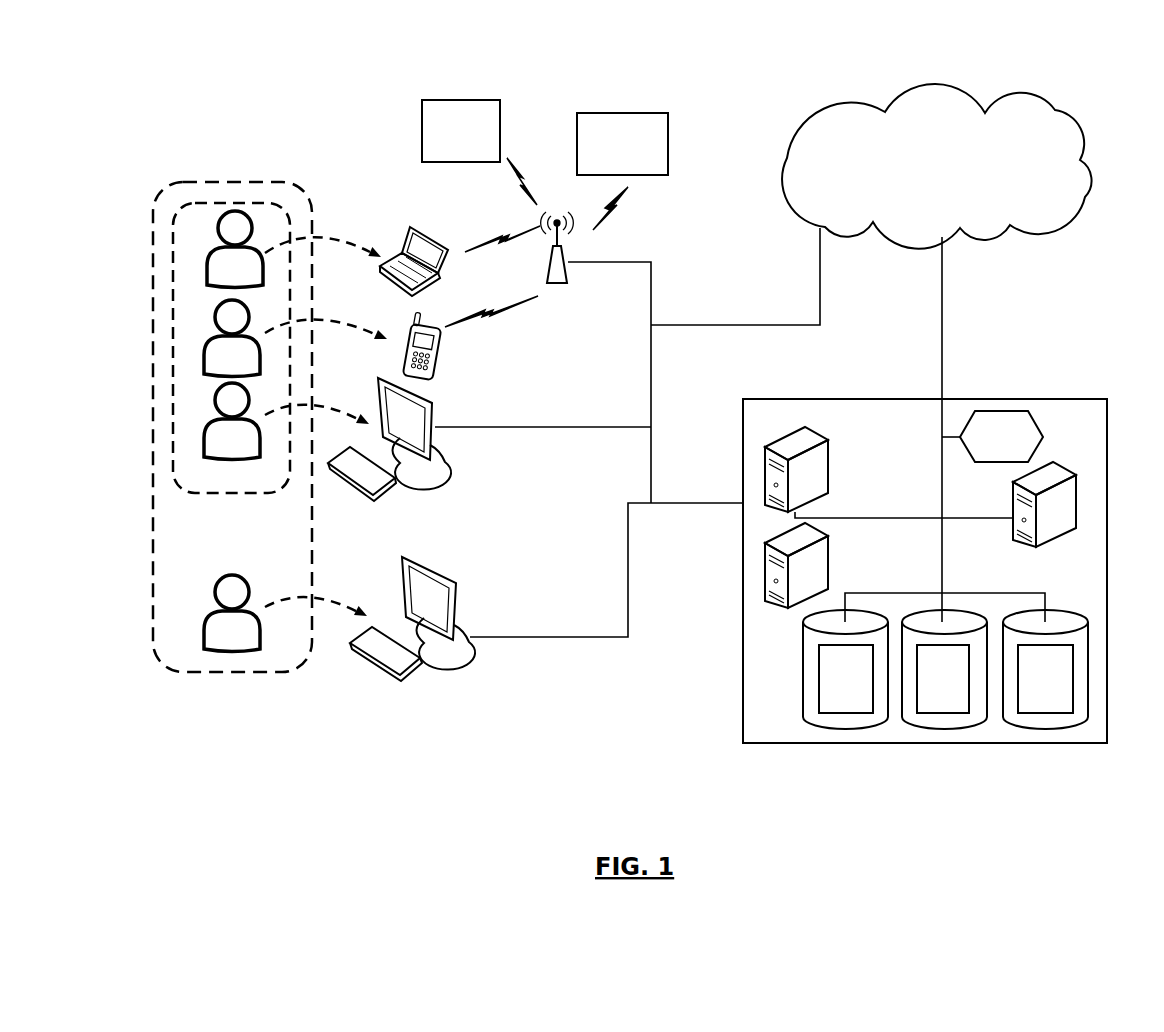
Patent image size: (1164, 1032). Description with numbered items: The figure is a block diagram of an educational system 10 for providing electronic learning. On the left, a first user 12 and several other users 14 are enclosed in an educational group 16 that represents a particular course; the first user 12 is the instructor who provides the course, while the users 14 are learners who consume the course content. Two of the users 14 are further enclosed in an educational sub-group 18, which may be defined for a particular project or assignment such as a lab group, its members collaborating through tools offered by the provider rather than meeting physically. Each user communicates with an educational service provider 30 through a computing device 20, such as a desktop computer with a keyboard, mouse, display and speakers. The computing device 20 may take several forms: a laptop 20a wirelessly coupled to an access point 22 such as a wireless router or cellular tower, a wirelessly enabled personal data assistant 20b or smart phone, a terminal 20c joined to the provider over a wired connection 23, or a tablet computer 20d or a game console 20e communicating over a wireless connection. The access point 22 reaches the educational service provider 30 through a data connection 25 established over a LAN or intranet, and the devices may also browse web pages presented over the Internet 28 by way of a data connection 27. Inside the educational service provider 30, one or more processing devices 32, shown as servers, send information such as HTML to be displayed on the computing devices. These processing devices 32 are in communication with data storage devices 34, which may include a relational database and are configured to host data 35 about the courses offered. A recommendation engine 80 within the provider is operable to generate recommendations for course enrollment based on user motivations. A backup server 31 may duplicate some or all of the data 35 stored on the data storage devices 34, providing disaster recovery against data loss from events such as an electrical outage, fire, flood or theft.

The educational system 10 is at (183, 146).
The user 12 is at (207, 612).
The users 14 is at (210, 245).
The educational group 16 is at (153, 505).
The educational sub-group 18 is at (266, 203).
The computing device 20 is at (458, 612).
The laptop 20a is at (425, 230).
The personal data assistant 20b is at (432, 330).
The terminal 20c is at (447, 465).
The tablet computer 20d is at (422, 128).
The game console 20e is at (625, 113).
The access point 22 is at (557, 285).
The wired connection 23 is at (538, 427).
The data connection 25 is at (712, 503).
The data connection 27 is at (758, 323).
The Internet 28 is at (775, 150).
The educational service provider 30 is at (760, 399).
The backup server 31 is at (1062, 465).
The processing devices 32 is at (815, 432).
The data storage devices 34 is at (955, 612).
The data 35 is at (1073, 677).
The recommendation engine 80 is at (1003, 410).